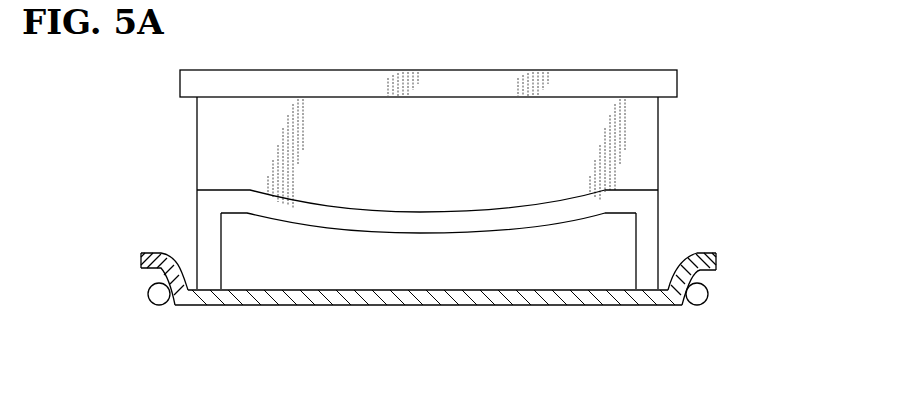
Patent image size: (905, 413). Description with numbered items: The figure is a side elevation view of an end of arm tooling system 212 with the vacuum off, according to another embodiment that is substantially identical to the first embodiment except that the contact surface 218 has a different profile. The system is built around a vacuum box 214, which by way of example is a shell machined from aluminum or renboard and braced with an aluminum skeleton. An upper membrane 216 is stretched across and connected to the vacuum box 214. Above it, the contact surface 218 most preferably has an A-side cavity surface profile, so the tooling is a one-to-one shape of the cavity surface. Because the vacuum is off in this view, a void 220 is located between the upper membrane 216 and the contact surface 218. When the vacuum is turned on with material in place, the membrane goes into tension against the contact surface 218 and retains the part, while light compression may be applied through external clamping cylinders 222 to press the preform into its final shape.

The end of arm tooling system 212 is at (112, 187).
The vacuum box 214 is at (191, 165).
The upper membrane 216 is at (603, 307).
The contact surface 218 is at (366, 235).
The void 220 is at (607, 252).
The external clamping cylinder 222 is at (157, 296).